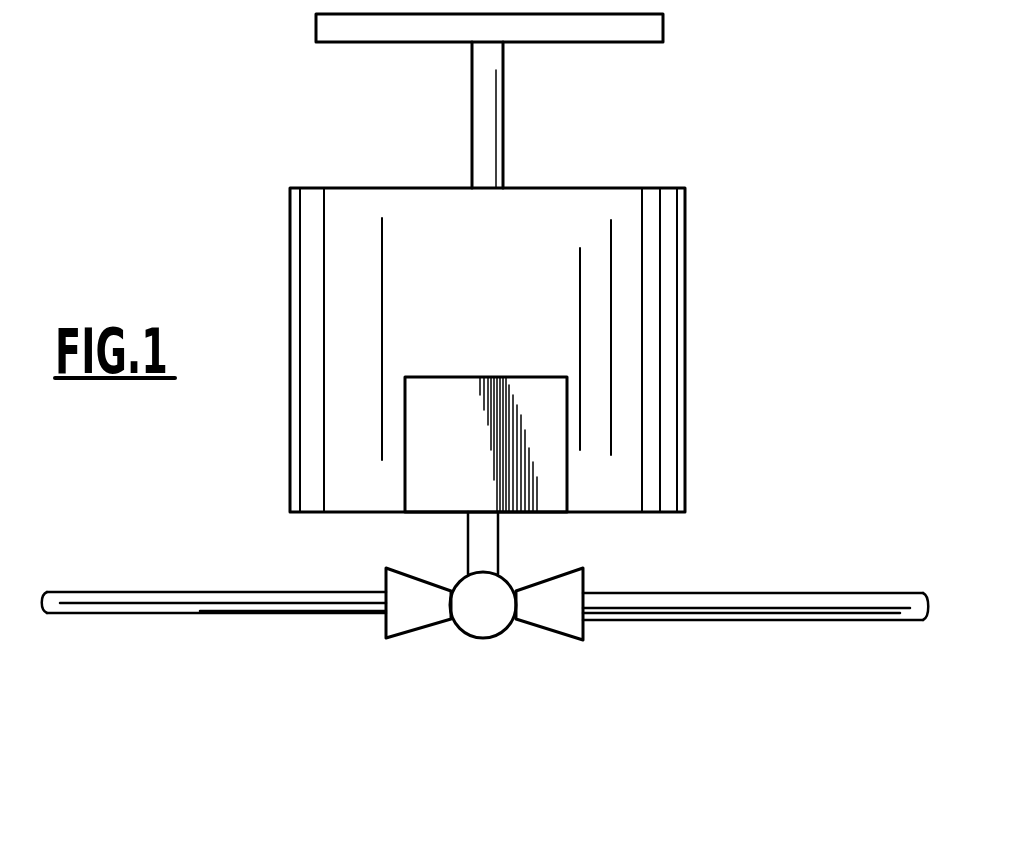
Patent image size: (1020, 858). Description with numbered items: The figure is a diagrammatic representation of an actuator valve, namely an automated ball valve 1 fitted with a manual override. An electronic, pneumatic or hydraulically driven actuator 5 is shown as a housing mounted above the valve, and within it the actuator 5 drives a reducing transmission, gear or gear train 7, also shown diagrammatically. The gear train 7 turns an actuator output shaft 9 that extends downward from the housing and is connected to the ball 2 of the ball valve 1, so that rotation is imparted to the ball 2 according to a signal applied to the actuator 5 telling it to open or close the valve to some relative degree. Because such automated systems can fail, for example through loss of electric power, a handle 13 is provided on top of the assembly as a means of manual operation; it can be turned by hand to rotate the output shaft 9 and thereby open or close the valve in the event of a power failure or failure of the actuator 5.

The ball valve 1 is at (474, 665).
The ball 2 is at (462, 580).
The actuator 5 is at (622, 283).
The reducing transmission, gear or gear train 7 is at (425, 430).
The actuator output shaft 9 is at (484, 545).
The handle 13 is at (585, 42).